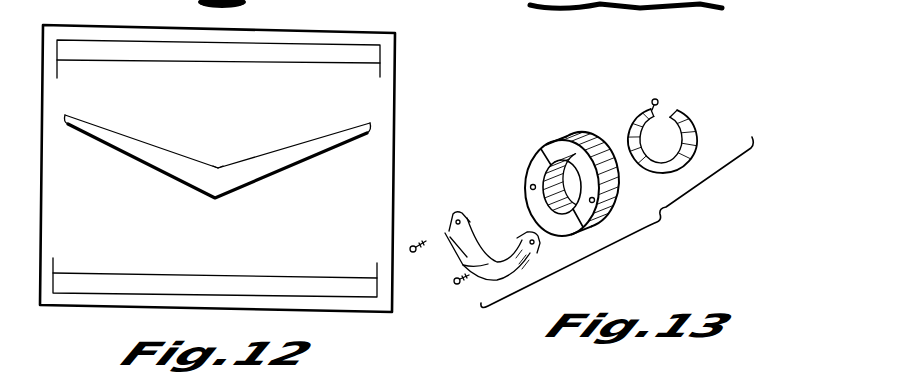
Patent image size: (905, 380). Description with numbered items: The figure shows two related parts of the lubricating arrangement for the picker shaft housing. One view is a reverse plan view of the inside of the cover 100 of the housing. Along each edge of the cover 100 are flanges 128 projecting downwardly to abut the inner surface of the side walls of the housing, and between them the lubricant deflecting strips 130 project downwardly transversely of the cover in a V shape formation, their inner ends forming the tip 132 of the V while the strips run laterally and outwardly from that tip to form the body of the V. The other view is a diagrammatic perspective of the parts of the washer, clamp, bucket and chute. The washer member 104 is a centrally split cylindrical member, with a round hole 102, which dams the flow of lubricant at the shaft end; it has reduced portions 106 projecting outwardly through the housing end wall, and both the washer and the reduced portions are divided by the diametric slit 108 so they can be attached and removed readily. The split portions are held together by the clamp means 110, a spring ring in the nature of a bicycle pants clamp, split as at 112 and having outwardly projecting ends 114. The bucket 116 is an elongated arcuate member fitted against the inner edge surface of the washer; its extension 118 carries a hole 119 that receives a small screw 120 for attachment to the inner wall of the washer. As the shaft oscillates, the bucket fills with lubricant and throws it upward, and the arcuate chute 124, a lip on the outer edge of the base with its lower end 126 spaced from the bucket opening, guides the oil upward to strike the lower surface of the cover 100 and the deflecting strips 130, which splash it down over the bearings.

In FIG. 12, the cover 100 is at (388, 85).
In FIG. 13, the hole 102 is at (573, 187).
In FIG. 13, the washer member 104 is at (560, 143).
In FIG. 13, the reduced portions 106 is at (612, 132).
In FIG. 13, the diametric slit 108 is at (536, 161).
In FIG. 13, the clamp means 110 is at (702, 137).
In FIG. 13, the split 112 is at (670, 108).
In FIG. 13, the outwardly projecting ends 114 is at (655, 99).
In FIG. 13, the bucket 116 is at (503, 270).
In FIG. 13, the extension 118 is at (470, 232).
In FIG. 13, the hole 119 is at (457, 218).
In FIG. 13, the screw 120 is at (416, 245).
In FIG. 13, the arcuate chute 124 is at (463, 257).
In FIG. 13, the lower end 126 is at (472, 262).
In FIG. 12, the flanges 128 is at (305, 47).
In FIG. 12, the lubricant deflecting strips 130 is at (268, 156).
In FIG. 12, the tip 132 is at (218, 168).